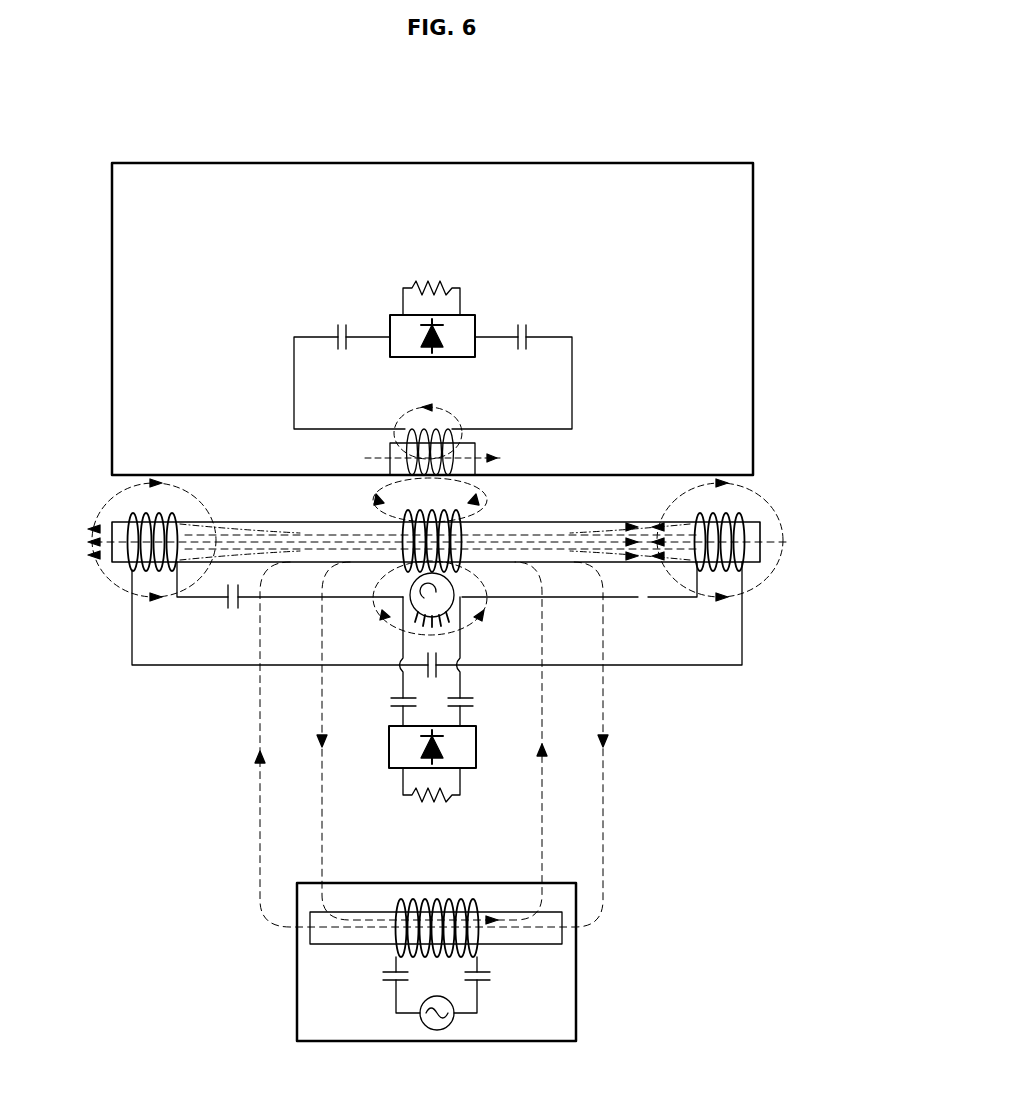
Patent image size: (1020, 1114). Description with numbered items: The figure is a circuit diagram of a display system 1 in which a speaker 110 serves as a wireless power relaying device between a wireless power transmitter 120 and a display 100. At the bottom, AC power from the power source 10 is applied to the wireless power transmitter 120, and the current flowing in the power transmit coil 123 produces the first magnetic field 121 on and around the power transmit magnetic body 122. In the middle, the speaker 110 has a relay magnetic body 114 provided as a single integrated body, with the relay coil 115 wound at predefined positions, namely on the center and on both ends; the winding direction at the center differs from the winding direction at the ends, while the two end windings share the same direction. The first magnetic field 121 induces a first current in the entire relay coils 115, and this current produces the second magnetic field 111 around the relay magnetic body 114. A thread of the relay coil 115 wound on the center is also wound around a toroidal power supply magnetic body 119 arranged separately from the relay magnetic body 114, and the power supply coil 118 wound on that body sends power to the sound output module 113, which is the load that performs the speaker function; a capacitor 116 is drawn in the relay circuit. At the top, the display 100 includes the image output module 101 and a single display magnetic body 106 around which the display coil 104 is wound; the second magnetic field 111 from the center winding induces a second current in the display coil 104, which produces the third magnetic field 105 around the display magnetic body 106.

The display system 1 is at (719, 125).
The power source 10 is at (455, 1020).
The display 100 is at (111, 367).
The image output module 101 is at (432, 283).
The display coil 104 is at (572, 345).
The third magnetic field 105 is at (462, 424).
The display magnetic body 106 is at (475, 450).
The speaker 110 is at (832, 478).
The second magnetic field 111 is at (90, 497).
The sound output module 113 is at (437, 800).
The relay magnetic body 114 is at (588, 565).
The relay coil 115 is at (160, 667).
The capacitor 116 is at (235, 612).
The power supply coil 118 is at (400, 683).
The power supply magnetic body 119 is at (460, 600).
The wireless power transmitter 120 is at (297, 975).
The first magnetic field 121 is at (542, 858).
The power transmit magnetic body 122 is at (562, 935).
The power transmit coil 123 is at (478, 958).